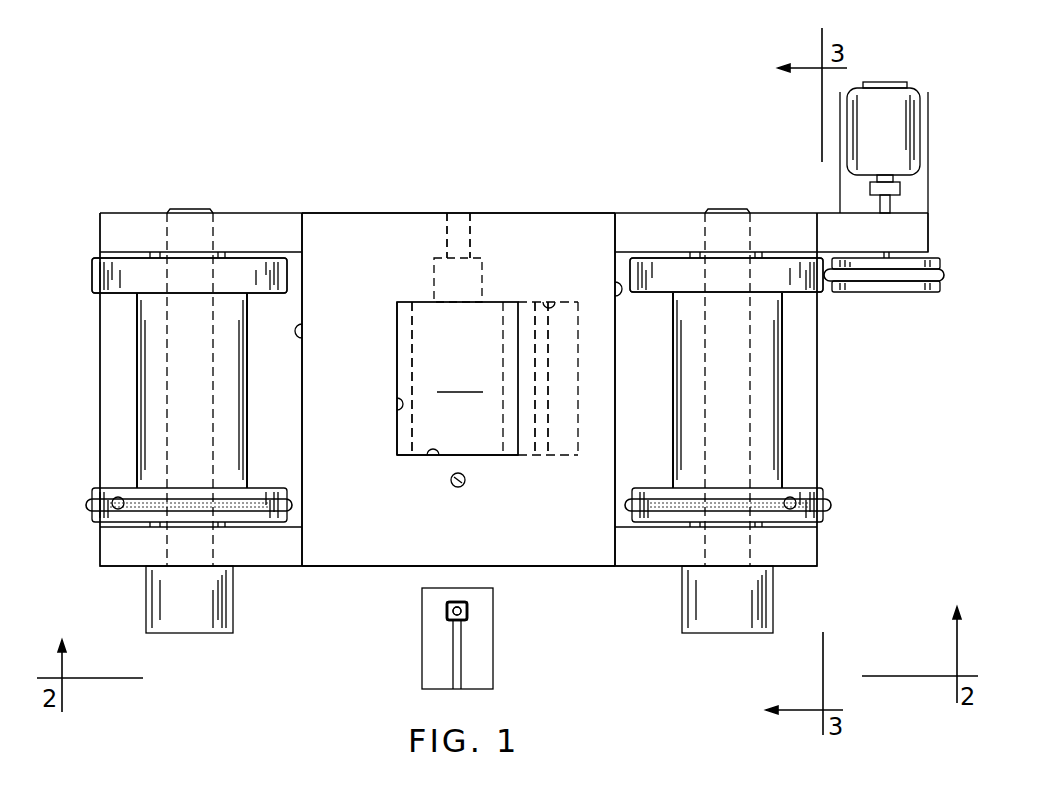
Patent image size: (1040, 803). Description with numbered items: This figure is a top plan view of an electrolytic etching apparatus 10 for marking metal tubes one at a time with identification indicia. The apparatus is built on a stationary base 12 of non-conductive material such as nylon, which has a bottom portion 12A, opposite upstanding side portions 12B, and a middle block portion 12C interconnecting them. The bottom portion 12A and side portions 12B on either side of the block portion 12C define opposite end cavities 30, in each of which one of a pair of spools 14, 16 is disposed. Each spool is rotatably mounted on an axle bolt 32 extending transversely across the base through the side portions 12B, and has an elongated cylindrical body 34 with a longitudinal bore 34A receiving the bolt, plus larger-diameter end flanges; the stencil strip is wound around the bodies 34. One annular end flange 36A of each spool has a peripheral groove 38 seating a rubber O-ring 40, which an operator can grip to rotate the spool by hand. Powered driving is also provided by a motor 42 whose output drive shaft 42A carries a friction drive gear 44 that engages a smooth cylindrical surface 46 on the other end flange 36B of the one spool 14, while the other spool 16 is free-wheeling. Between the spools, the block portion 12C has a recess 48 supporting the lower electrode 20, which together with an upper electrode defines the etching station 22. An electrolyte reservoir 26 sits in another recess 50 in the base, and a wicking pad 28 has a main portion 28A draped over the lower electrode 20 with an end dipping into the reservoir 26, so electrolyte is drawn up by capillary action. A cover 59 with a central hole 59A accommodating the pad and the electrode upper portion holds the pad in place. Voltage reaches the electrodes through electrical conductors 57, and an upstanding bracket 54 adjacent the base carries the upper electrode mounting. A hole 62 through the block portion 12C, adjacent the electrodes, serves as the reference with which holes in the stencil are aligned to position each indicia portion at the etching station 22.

The electrolytic etching apparatus 10 is at (692, 152).
The stationary base 12 is at (348, 567).
The bottom portion 12A is at (98, 327).
The side portions 12B is at (262, 222).
The block portion 12C is at (562, 568).
The spool 14 is at (782, 413).
The spool 16 is at (137, 413).
The lower electrode 20 is at (410, 435).
The etching station 22 is at (508, 270).
The reservoir 26 is at (557, 458).
The wicking pad 28 is at (470, 440).
The main portion 28A is at (457, 378).
The end cavities 30 is at (302, 333).
The axle bolts 32 is at (182, 378).
The cylindrical body 34 is at (240, 455).
The longitudinal bore 34A is at (150, 352).
The annular end flange 36A is at (145, 525).
The end flange 36B is at (133, 262).
The groove 38 is at (118, 497).
The O-ring 40 is at (105, 505).
The motor 42 is at (915, 140).
The output drive shaft 42A is at (890, 250).
The friction drive gear 44 is at (942, 280).
The smooth cylindrical surface 46 is at (95, 275).
The recess 48 is at (435, 460).
The recess 50 is at (556, 305).
The bracket 54 is at (457, 612).
The electrical conductors 57 is at (468, 228).
The cover 59 is at (388, 568).
The central hole 59A is at (397, 405).
The hole 62 is at (464, 486).